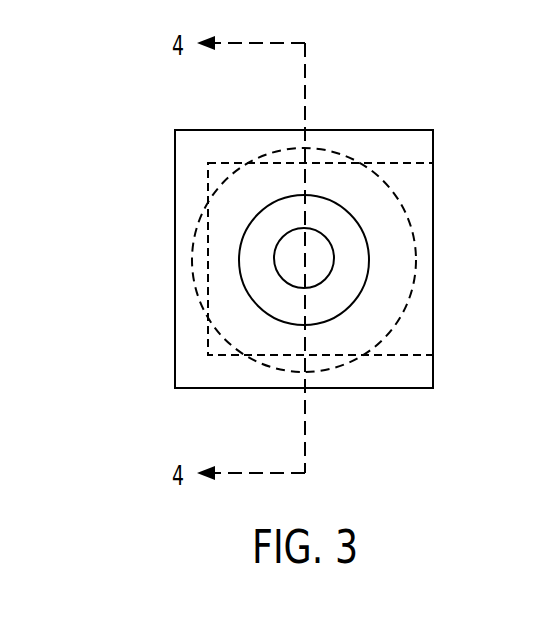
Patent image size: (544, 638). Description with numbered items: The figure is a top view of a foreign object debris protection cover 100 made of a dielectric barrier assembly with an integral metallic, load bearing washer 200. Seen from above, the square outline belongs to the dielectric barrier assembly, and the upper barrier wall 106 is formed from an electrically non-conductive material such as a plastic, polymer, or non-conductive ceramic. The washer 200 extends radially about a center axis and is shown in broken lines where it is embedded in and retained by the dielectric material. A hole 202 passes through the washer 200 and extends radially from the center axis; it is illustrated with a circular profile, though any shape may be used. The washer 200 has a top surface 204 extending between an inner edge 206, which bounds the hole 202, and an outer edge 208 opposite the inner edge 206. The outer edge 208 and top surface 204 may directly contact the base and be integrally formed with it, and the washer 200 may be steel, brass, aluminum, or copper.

The foreign object debris (FOD) protection cover 100 is at (173, 125).
The upper barrier wall 106 is at (175, 240).
The washer 200 is at (390, 227).
The hole 202 is at (307, 260).
The top surface 204 is at (272, 293).
The inner edge 206 is at (323, 280).
The outer edge 208 is at (408, 298).